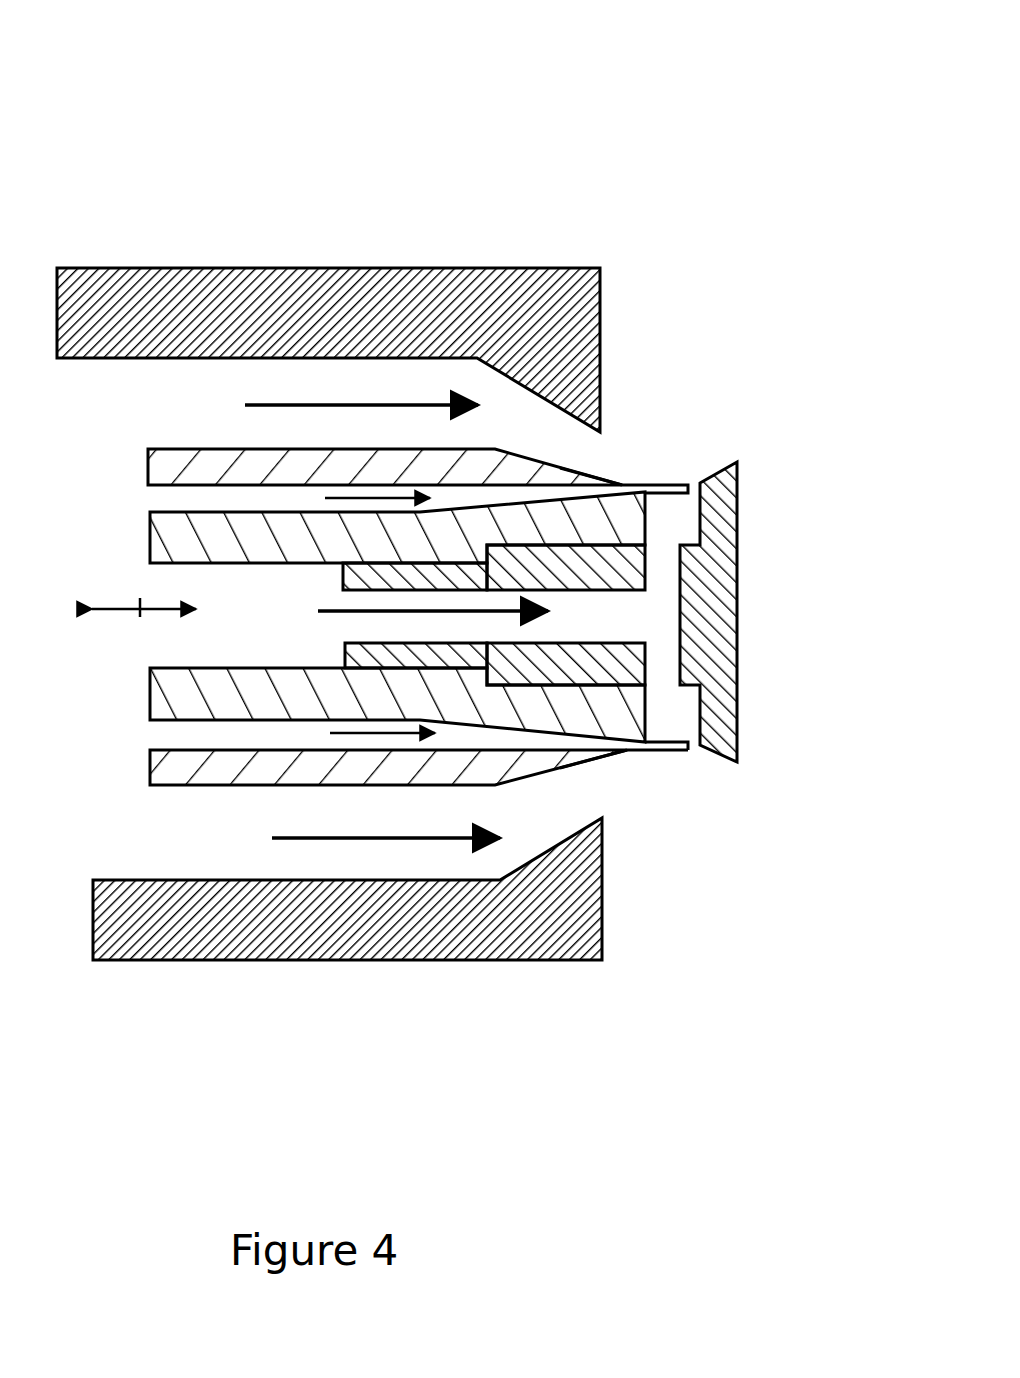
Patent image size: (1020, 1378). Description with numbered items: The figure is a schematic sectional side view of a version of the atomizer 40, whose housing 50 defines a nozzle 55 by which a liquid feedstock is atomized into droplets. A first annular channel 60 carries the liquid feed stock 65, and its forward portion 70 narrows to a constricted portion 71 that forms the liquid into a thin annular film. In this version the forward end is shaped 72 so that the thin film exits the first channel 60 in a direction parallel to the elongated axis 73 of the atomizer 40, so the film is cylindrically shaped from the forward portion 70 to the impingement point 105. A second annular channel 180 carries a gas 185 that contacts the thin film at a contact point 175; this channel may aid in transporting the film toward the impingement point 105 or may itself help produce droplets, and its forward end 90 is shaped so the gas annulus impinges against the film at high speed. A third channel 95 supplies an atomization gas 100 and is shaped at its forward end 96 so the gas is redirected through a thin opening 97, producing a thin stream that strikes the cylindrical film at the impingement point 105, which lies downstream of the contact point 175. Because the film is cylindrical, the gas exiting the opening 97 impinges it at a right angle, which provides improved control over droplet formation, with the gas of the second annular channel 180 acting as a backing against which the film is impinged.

The atomizer 40 is at (574, 86).
The housing 50 is at (347, 300).
The nozzle 55 is at (808, 398).
The first annular channel 60 is at (157, 500).
The liquid feed stock 65 is at (355, 500).
The forward portion of the first annular channel 70 is at (544, 754).
The constricted portion 71 is at (512, 500).
The shaped forward end 72 is at (640, 753).
The elongated axis 73 is at (144, 592).
The forward end of the second annular channel 90 is at (512, 400).
The third channel 95 is at (165, 648).
The forward end of the third channel 96 is at (641, 618).
The thin opening 97 is at (735, 486).
The atomization gas 100 is at (378, 632).
The impingement point 105 is at (714, 447).
The contact point 175 is at (652, 789).
The second annular channel 180 is at (160, 427).
The gas 185 is at (388, 406).